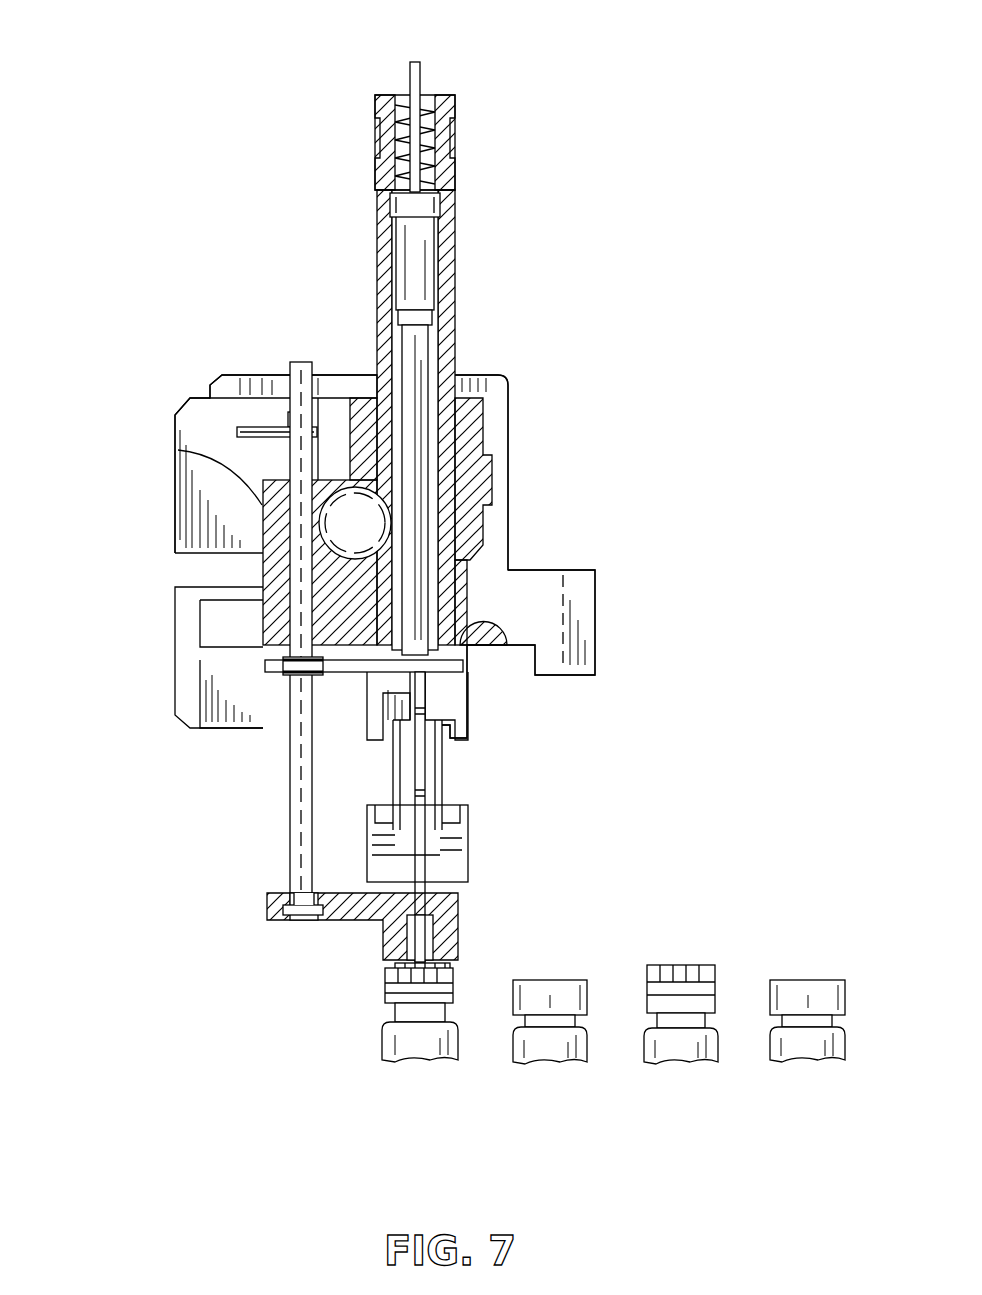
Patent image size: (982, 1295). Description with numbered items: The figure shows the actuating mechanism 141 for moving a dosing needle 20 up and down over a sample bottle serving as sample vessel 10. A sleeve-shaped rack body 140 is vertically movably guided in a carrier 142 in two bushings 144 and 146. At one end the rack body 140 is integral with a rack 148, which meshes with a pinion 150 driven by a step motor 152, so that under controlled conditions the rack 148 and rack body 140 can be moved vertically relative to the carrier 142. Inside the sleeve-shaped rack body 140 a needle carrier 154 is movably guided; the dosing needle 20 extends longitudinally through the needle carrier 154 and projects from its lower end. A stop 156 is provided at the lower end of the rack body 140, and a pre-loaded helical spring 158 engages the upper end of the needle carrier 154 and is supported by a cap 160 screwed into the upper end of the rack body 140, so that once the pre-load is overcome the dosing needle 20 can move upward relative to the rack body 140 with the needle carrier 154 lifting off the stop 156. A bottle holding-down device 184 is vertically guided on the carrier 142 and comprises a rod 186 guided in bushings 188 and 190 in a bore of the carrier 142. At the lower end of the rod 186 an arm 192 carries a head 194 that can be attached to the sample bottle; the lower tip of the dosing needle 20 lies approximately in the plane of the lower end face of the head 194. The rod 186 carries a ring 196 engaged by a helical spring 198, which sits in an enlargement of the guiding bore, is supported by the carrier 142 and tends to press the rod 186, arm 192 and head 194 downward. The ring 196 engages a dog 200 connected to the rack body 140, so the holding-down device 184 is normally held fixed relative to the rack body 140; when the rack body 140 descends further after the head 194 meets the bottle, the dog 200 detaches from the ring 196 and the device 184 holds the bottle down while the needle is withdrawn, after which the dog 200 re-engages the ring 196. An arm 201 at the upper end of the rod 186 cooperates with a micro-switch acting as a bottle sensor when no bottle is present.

The sample vessel 10 is at (390, 1045).
The dosing needle 20 is at (440, 833).
The rack body 140 is at (440, 352).
The actuating mechanism 141 is at (625, 398).
The carrier 142 is at (485, 480).
The bushing 144 is at (480, 430).
The bushing 146 is at (510, 648).
The rack 148 is at (372, 393).
The pinion 150 is at (338, 492).
The step motor 152 is at (262, 490).
The needle carrier 154 is at (433, 333).
The stop 156 is at (345, 678).
The helical spring 158 is at (452, 142).
The cap 160 is at (448, 95).
The bottle holding-down device 184 is at (266, 922).
The rod 186 is at (300, 855).
The bushing 188 is at (283, 512).
The bushing 190 is at (285, 590).
The arm 192 is at (370, 922).
The head 194 is at (460, 930).
The ring 196 is at (300, 668).
The helical spring 198 is at (440, 578).
The dog 200 is at (395, 674).
The arm 201 is at (273, 427).